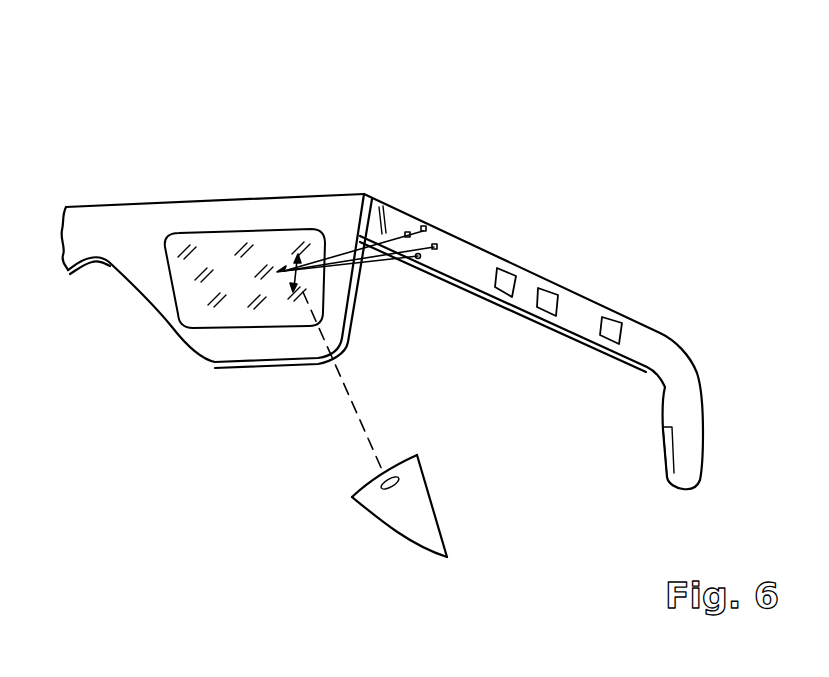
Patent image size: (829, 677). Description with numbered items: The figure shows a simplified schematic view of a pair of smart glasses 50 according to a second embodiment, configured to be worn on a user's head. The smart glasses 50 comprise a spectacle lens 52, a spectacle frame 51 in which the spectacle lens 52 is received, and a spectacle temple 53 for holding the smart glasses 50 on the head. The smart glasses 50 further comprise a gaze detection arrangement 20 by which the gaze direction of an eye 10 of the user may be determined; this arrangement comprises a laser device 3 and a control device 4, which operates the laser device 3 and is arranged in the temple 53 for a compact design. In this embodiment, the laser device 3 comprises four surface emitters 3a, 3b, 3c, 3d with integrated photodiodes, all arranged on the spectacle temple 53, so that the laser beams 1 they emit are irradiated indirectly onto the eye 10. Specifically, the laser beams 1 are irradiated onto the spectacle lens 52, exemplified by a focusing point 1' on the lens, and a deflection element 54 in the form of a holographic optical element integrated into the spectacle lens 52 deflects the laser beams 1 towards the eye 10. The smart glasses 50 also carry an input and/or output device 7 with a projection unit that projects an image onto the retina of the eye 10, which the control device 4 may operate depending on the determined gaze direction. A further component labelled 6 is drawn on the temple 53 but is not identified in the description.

The laser device 3 is at (113, 110).
The smart glasses 50 is at (600, 104).
The spectacle frame 51 is at (100, 230).
The spectacle lens 52 is at (193, 302).
The spectacle temple 53 is at (657, 354).
The deflection element 54 is at (250, 248).
The gaze detection arrangement 20 is at (412, 173).
The surface emitter 3a is at (437, 246).
The surface emitter 3b is at (421, 256).
The surface emitter 3c is at (424, 226).
The surface emitter 3d is at (408, 234).
The laser beams 1 is at (355, 281).
The focusing point 1' is at (305, 213).
The input and/or output device 7 is at (503, 280).
The memory unit 6 is at (543, 298).
The control device 4 is at (612, 323).
The eye 10 is at (388, 537).